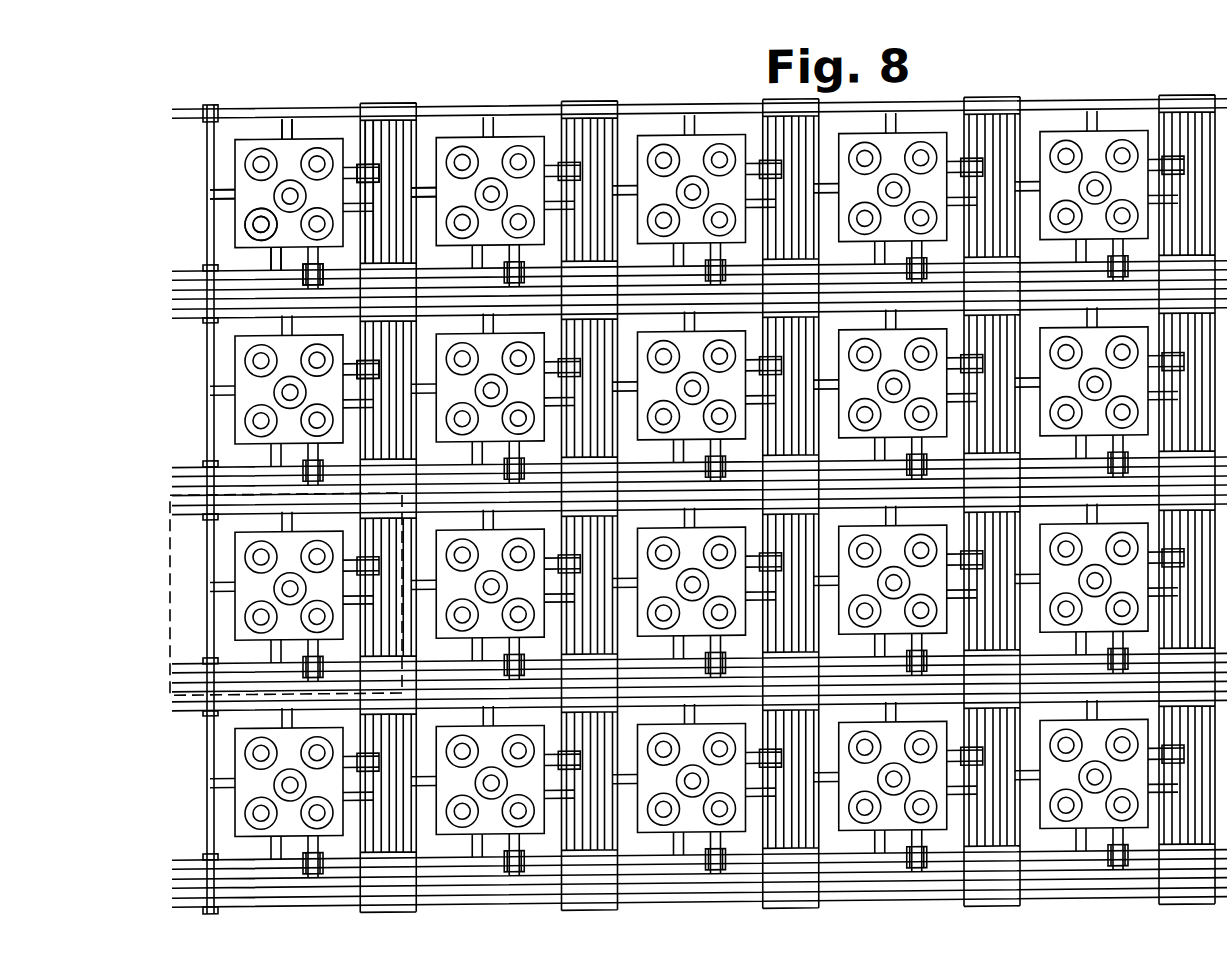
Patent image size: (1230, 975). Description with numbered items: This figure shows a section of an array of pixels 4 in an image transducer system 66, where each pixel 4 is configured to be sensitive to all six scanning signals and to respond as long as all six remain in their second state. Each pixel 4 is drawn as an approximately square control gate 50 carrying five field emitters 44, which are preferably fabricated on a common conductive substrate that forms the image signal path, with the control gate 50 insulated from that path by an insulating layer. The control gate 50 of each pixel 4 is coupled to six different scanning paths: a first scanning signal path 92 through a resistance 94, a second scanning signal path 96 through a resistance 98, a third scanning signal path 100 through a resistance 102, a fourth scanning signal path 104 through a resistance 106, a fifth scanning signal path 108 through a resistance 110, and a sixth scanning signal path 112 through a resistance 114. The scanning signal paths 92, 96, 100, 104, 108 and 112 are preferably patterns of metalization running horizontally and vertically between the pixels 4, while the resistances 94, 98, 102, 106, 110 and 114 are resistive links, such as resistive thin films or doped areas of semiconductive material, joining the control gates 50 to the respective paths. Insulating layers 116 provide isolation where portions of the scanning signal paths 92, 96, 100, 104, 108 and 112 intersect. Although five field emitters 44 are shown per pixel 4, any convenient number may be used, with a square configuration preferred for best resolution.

The pixel 4 is at (146, 577).
The field emitter 44 is at (244, 228).
The control gate 50 is at (243, 153).
The image transducer system 66 is at (648, 494).
The first scanning signal path 92 is at (185, 311).
The resistance 94 is at (287, 130).
The second scanning signal path 96 is at (180, 274).
The resistance 98 is at (272, 264).
The third scanning signal path 100 is at (185, 292).
The resistance 102 is at (255, 216).
The fourth scanning signal path 104 is at (358, 144).
The resistance 106 is at (350, 209).
The fifth scanning signal path 108 is at (382, 122).
The resistance 110 is at (432, 192).
The sixth scanning signal path 112 is at (208, 148).
The resistance 114 is at (228, 193).
The insulating layer 116 is at (205, 109).